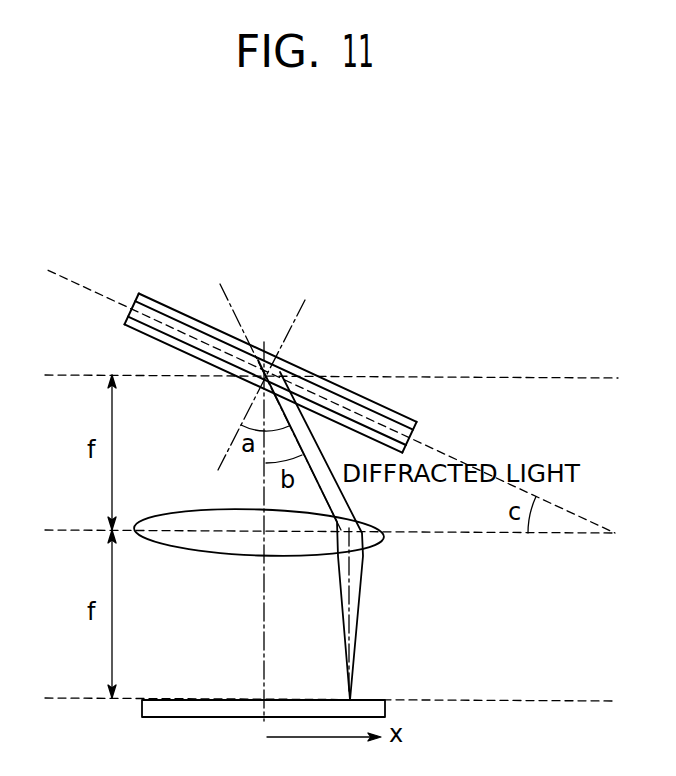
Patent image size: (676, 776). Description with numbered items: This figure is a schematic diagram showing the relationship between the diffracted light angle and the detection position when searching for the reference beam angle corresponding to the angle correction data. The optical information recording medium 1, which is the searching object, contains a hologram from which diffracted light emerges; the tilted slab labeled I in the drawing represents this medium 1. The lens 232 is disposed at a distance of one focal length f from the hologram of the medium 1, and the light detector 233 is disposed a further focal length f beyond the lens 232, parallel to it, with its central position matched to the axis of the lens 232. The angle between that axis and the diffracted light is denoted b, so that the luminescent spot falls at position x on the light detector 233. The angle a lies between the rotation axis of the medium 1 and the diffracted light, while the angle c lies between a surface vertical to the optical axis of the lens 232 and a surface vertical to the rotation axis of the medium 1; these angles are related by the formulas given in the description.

The lens 232 is at (378, 532).
The light detector 233 is at (376, 700).
The diffraction grating I is at (128, 313).
The optical information recording medium 1 is at (270, 373).